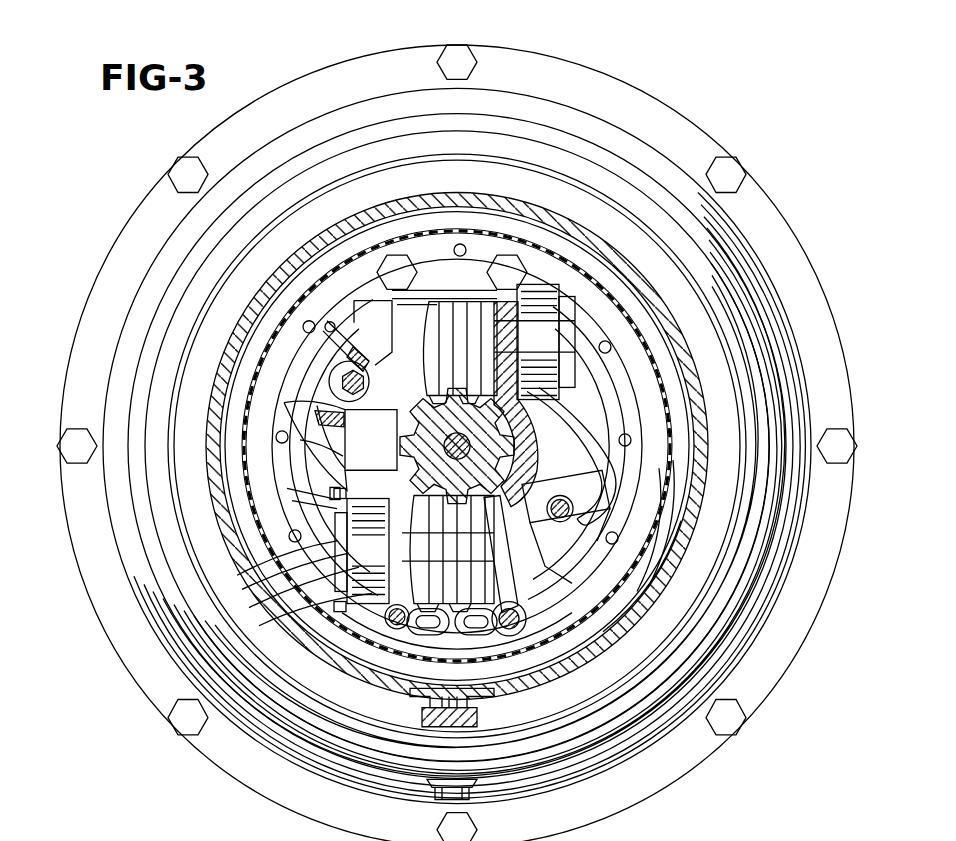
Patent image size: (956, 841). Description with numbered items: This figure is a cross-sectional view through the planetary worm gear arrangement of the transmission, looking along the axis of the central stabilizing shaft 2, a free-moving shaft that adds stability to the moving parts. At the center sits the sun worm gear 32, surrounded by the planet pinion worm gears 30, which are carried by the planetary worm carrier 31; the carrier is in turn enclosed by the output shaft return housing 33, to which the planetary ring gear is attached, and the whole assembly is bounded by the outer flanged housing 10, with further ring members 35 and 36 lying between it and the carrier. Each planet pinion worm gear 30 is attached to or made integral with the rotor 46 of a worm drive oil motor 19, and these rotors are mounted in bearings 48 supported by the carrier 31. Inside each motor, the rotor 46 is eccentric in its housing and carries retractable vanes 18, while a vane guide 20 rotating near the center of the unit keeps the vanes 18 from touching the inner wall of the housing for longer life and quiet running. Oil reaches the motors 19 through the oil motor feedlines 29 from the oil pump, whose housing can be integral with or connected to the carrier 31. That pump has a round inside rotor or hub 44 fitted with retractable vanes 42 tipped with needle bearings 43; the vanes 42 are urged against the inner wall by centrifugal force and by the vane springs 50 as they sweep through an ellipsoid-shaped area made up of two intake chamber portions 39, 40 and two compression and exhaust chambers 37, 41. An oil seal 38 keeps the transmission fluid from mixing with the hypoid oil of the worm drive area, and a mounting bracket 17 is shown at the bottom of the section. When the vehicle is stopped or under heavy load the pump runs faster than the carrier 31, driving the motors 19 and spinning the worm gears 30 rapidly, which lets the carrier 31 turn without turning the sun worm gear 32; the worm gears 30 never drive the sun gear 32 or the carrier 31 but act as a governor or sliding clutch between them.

The central stabilizing shaft 2 is at (404, 426).
The housing 10 is at (446, 806).
The mounting bracket 17 is at (424, 708).
The vanes 18 is at (350, 510).
The worm drive oil motor 19 is at (300, 637).
The vane guide 20 is at (266, 604).
The oil motor feedlines 29 is at (320, 445).
The planet pinion worm gears 30 is at (474, 542).
The planetary worm carrier 31 is at (443, 285).
The sun worm gear 32 is at (410, 410).
The output shaft return housing 33 is at (416, 220).
The outer flange 35 is at (746, 258).
The cover ring 36 is at (628, 250).
The compression and exhaust chamber 37 is at (342, 315).
The oil seal 38 is at (492, 300).
The intake chamber portion 39 is at (600, 297).
The intake chamber portion 40 is at (264, 573).
The compression and exhaust chamber 41 is at (609, 602).
The retractable vanes 42 is at (640, 566).
The needle bearings 43 is at (622, 578).
The inside rotor or hub 44 is at (652, 402).
The rotor 46 is at (331, 645).
The bearings 48 is at (350, 652).
The vane springs 50 is at (566, 526).